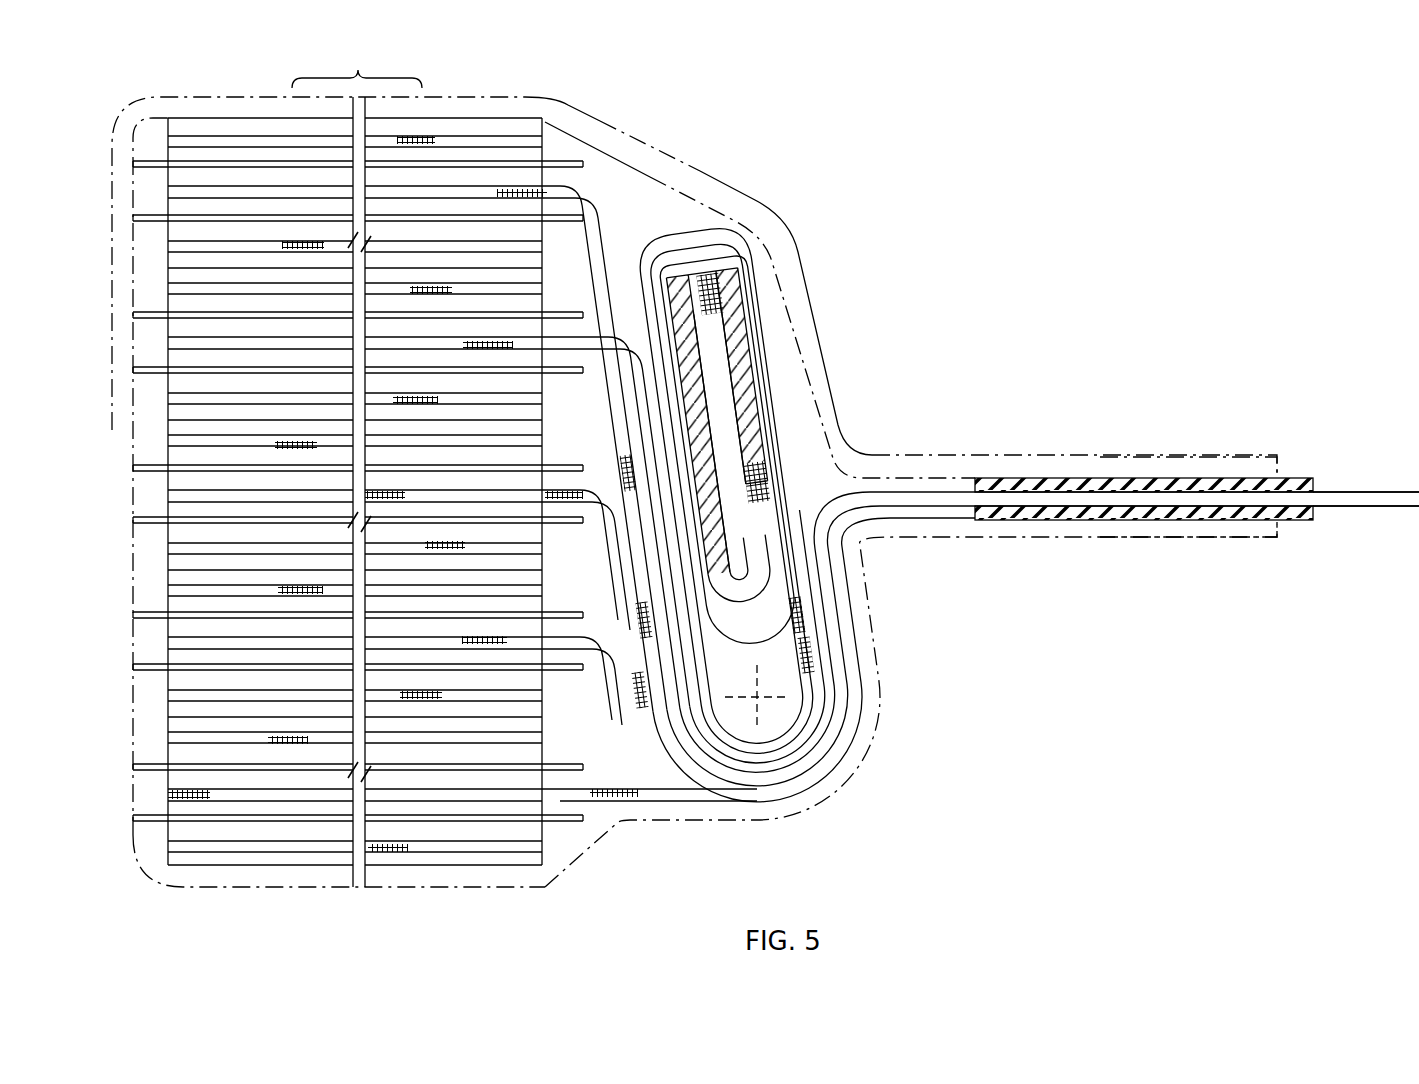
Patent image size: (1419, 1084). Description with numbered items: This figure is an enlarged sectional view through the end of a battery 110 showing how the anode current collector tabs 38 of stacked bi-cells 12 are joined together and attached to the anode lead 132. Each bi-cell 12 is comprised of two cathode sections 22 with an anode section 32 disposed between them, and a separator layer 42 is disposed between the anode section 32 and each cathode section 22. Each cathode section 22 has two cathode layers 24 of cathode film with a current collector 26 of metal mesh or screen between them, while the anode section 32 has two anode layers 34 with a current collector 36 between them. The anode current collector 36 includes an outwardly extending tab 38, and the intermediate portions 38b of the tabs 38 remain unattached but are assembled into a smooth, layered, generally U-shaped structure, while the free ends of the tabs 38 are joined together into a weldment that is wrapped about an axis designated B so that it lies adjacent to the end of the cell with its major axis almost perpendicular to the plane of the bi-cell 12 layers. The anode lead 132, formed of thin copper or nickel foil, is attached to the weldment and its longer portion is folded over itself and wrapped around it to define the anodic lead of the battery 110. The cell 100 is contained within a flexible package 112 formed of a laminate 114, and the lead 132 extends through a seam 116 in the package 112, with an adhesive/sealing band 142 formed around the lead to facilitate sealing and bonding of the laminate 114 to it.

The bi-cell 12 is at (157, 715).
The cathode section 22 is at (158, 131).
The anode section 32 is at (158, 190).
The anode layer 34 is at (207, 207).
The anode current collector 36 is at (247, 193).
The cathode layer 24 is at (438, 160).
The cathode current collector 26 is at (486, 150).
The separator layer 42 is at (580, 372).
The cell 100 is at (556, 147).
The battery 110 is at (845, 140).
The flexible package 112 is at (703, 168).
The laminate 114 is at (650, 140).
The anode current collector tab 38 is at (828, 690).
The intermediate portion of anode current collector tab 38b is at (680, 593).
The anode lead 132 is at (1197, 448).
The adhesive/sealing band 142 is at (1076, 519).
The seam 116 is at (1214, 455).